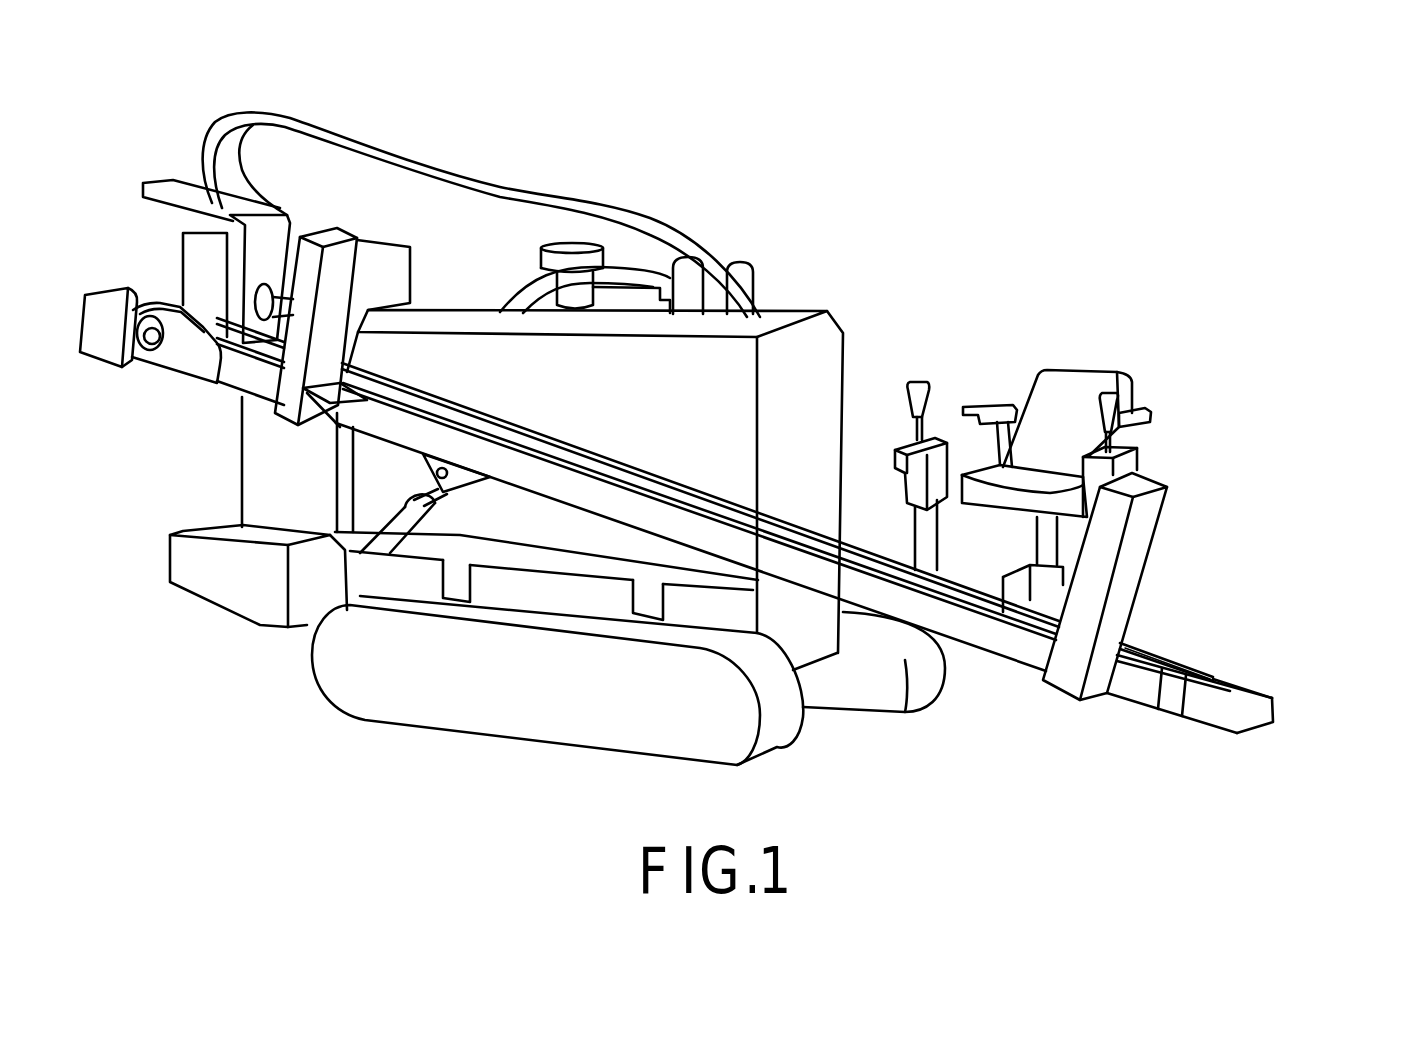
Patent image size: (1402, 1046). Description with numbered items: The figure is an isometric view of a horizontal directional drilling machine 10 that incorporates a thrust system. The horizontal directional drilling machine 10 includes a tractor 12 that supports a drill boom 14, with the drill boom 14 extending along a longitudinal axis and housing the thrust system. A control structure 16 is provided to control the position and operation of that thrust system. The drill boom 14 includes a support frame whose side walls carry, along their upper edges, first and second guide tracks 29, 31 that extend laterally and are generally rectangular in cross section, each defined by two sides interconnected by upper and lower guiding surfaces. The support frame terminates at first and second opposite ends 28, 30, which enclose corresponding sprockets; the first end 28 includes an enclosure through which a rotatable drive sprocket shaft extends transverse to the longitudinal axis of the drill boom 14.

The horizontal directional drilling machine 10 is at (250, 665).
The tractor 12 is at (838, 312).
The drill boom 14 is at (990, 652).
The control structure 16 is at (1085, 368).
The first end 28 is at (1272, 690).
The first guide track 29 is at (1163, 677).
The second end 30 is at (222, 410).
The second guide track 31 is at (1148, 647).